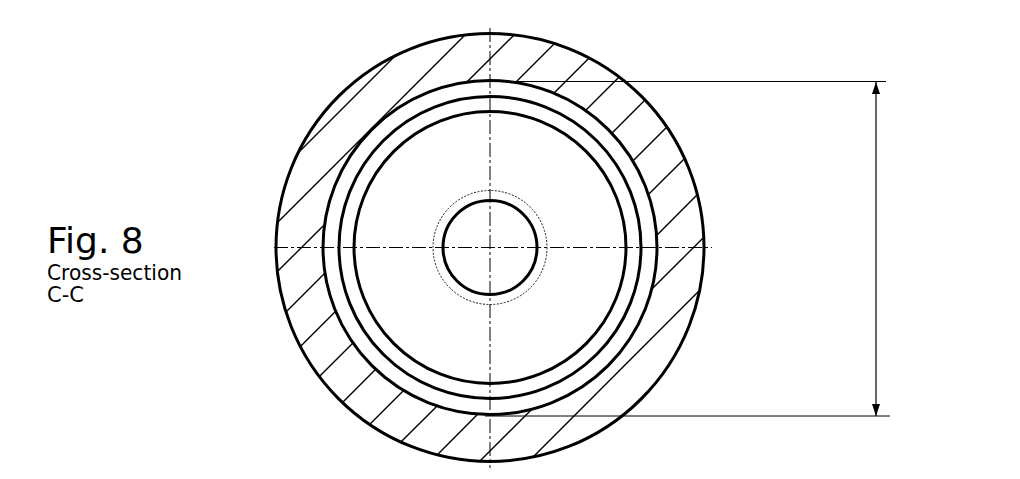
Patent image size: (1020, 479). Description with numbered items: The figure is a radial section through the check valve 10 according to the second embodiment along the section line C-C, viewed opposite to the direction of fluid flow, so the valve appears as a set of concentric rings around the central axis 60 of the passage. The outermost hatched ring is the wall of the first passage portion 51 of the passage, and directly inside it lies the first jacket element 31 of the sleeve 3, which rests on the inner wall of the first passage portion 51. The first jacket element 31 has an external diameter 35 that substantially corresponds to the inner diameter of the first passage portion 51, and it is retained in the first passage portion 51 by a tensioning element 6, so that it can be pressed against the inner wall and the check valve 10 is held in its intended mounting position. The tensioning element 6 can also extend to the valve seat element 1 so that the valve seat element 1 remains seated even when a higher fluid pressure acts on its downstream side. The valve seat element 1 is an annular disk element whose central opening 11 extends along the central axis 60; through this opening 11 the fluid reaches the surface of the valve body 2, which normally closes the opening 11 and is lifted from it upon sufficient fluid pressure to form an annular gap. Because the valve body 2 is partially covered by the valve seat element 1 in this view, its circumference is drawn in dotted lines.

The check valve 10 is at (231, 99).
The first passage portion 51 is at (347, 110).
The first jacket element 31 is at (637, 167).
The tensioning element 6 is at (425, 118).
The sleeve 3 is at (398, 288).
The valve seat element 1 is at (545, 322).
The valve body 2 is at (472, 268).
The opening 11 is at (538, 263).
The central axis 60 is at (490, 248).
The external diameter 35 is at (876, 280).